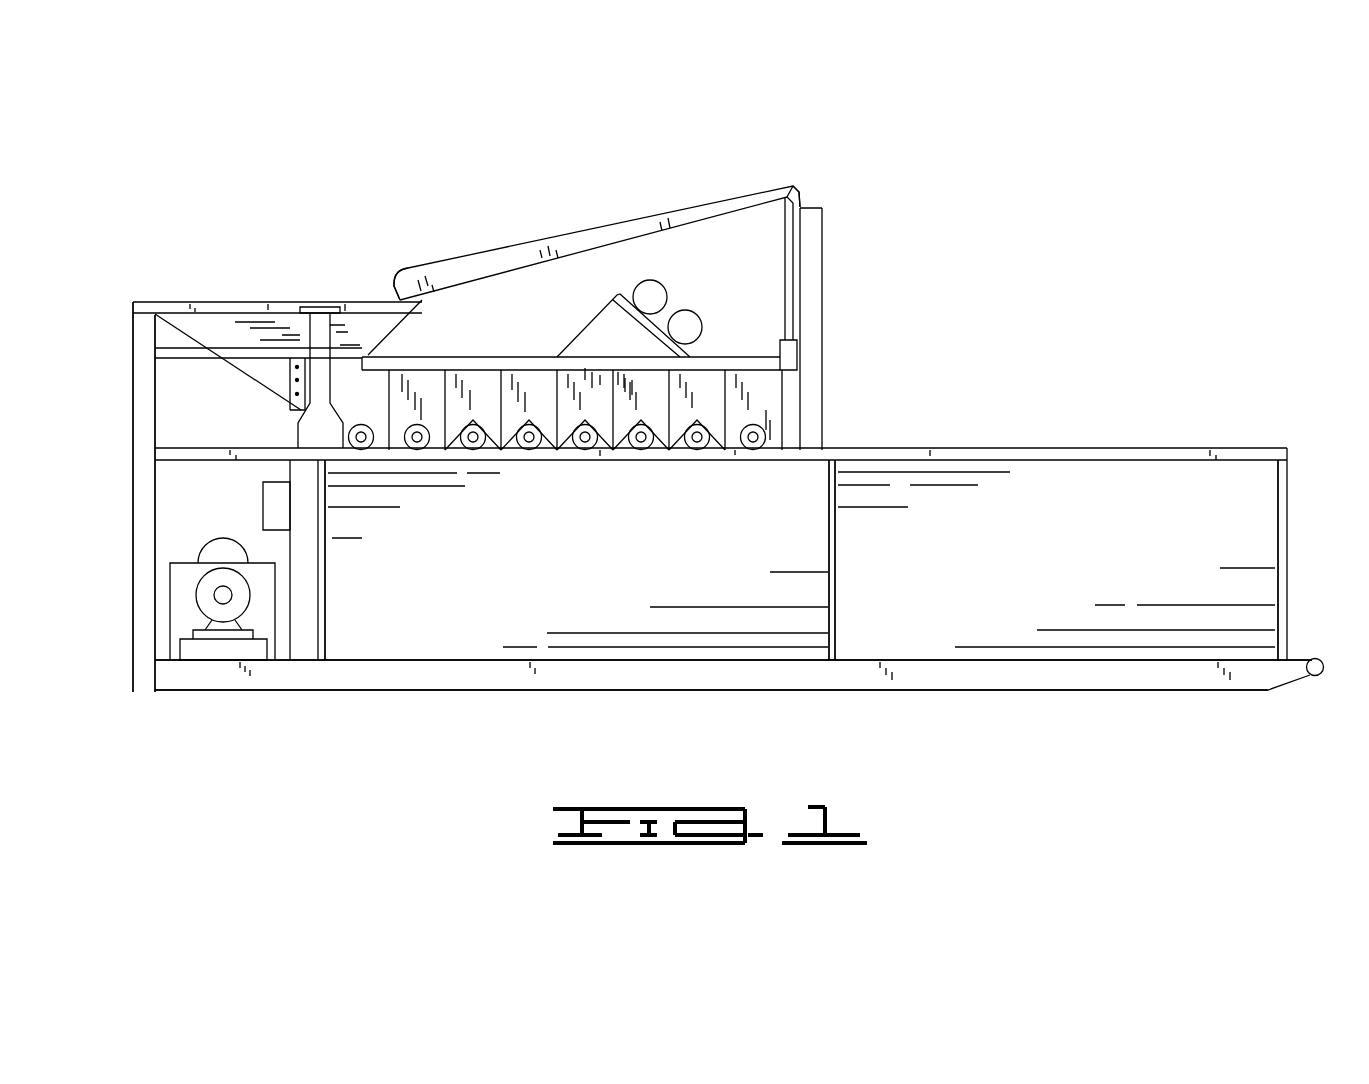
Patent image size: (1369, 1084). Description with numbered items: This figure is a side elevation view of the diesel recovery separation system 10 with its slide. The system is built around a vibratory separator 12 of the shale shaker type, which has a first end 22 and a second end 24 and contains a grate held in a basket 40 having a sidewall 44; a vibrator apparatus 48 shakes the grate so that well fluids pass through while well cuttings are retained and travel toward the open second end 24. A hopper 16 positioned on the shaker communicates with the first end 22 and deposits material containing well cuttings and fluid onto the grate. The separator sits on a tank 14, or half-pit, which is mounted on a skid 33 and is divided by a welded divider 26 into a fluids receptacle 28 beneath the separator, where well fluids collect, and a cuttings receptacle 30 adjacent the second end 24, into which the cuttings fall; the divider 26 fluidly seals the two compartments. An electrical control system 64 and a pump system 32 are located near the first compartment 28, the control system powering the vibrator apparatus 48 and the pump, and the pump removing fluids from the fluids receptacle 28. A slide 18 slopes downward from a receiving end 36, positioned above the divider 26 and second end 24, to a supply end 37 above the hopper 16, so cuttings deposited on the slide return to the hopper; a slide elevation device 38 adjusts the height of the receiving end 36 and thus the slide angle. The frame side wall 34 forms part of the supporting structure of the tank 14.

The separation system 10 is at (1003, 227).
The vibratory separator 12 is at (730, 363).
The tank 14 is at (960, 448).
The hopper 16 is at (217, 325).
The slide 18 is at (565, 235).
The first end 22 is at (368, 357).
The second end 24 is at (762, 357).
The divider 26 is at (837, 560).
The fluids receptacle 28 is at (448, 630).
The cuttings receptacle 30 is at (1252, 557).
The pump system 32 is at (208, 600).
The skid 33 is at (177, 687).
The side wall 34 is at (176, 452).
The receiving end 36 is at (778, 190).
The supply end 37 is at (405, 272).
The slide elevation device 38 is at (793, 267).
The basket 40 is at (550, 430).
The sidewall 44 is at (718, 422).
The vibrator apparatus 48 is at (650, 297).
The electrical control system 64 is at (272, 510).